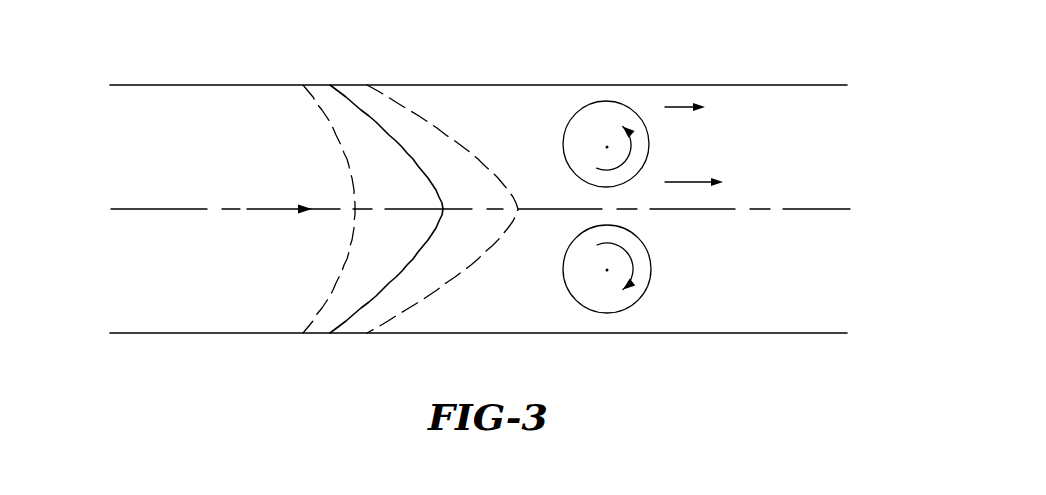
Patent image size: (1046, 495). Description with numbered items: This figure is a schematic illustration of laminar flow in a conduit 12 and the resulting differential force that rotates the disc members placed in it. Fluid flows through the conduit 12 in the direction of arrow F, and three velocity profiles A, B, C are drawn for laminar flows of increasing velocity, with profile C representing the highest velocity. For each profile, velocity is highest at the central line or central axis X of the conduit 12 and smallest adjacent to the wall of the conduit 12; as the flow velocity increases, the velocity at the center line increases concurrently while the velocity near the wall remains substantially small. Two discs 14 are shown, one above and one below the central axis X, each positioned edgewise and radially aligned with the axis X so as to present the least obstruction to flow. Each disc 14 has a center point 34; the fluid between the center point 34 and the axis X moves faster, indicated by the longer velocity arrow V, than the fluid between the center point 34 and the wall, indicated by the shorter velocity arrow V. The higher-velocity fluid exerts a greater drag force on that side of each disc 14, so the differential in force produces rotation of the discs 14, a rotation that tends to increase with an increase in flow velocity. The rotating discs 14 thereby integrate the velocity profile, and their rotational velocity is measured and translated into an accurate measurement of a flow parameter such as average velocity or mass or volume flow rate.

The conduit 12 is at (518, 85).
The disc 14 is at (563, 131).
The center point 34 is at (607, 147).
The velocity profile A is at (348, 162).
The velocity profile B is at (373, 118).
The velocity profile C is at (435, 127).
The arrow F is at (287, 224).
The velocity V is at (694, 136).
The central axis X is at (830, 209).